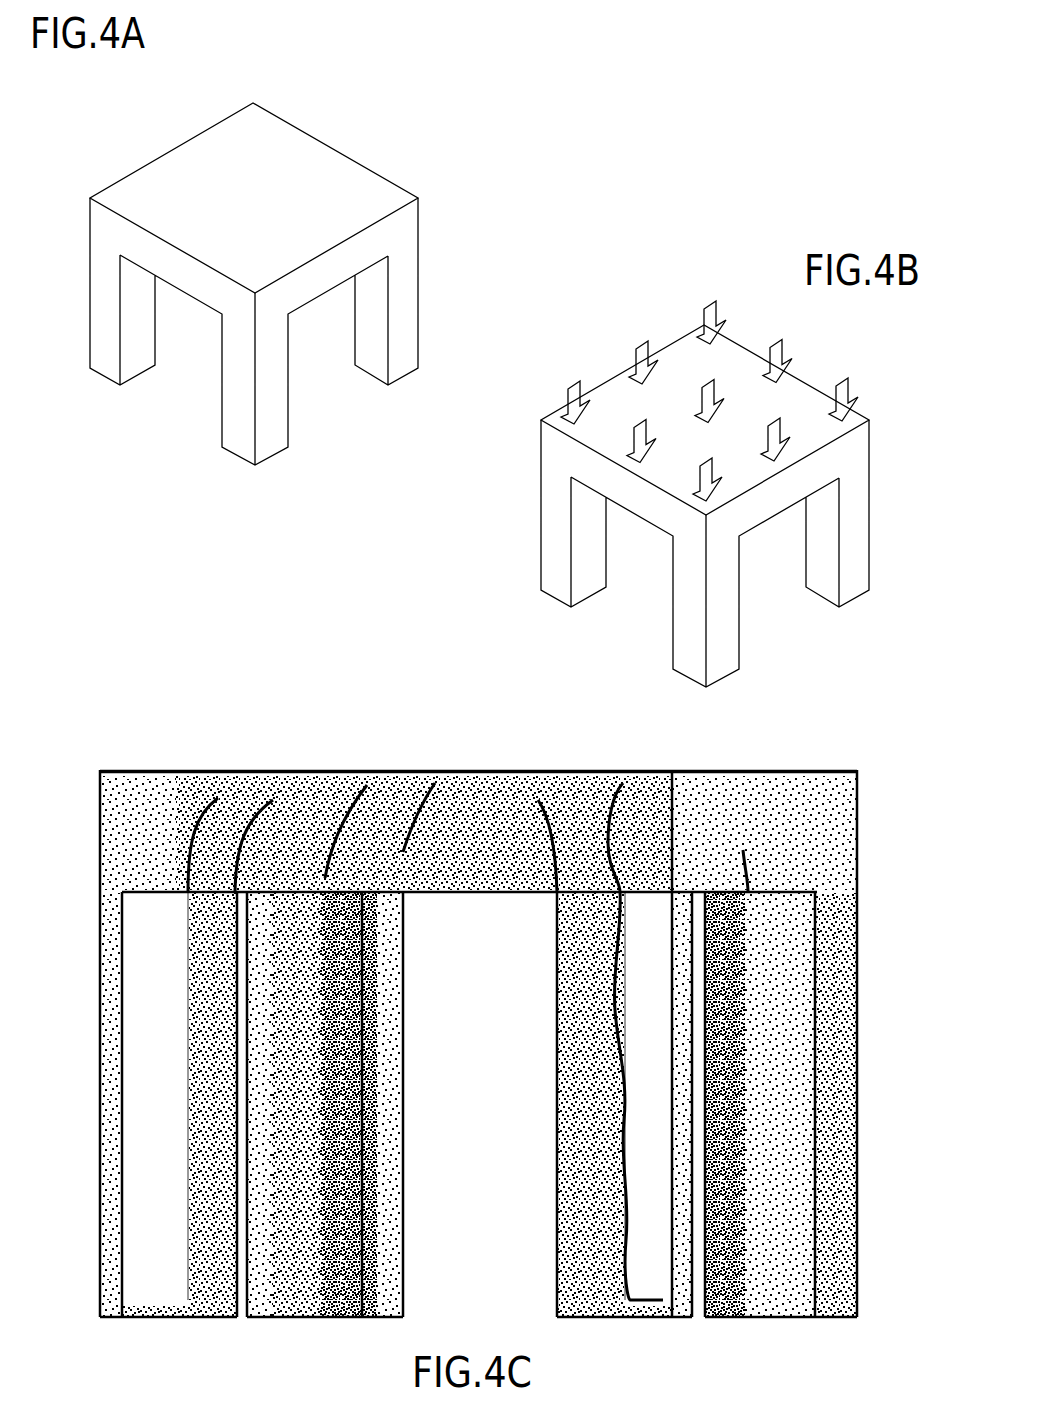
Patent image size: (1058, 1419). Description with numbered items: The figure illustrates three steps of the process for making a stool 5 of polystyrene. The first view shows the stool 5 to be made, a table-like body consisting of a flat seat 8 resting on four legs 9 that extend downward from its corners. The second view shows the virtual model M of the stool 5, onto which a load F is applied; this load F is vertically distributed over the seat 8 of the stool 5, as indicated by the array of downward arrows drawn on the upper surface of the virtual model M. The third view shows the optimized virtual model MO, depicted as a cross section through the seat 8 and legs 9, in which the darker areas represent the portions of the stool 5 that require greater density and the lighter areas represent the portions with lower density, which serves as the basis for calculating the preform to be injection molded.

In FIG. 4A, the stool 5 is at (259, 270).
In FIG. 4A, the seat 8 is at (273, 153).
In FIG. 4A, the legs 9 is at (407, 287).
In FIG. 4B, the load F is at (647, 345).
In FIG. 4B, the virtual model M is at (503, 484).
In FIG. 4C, the optimized virtual model MO is at (112, 715).